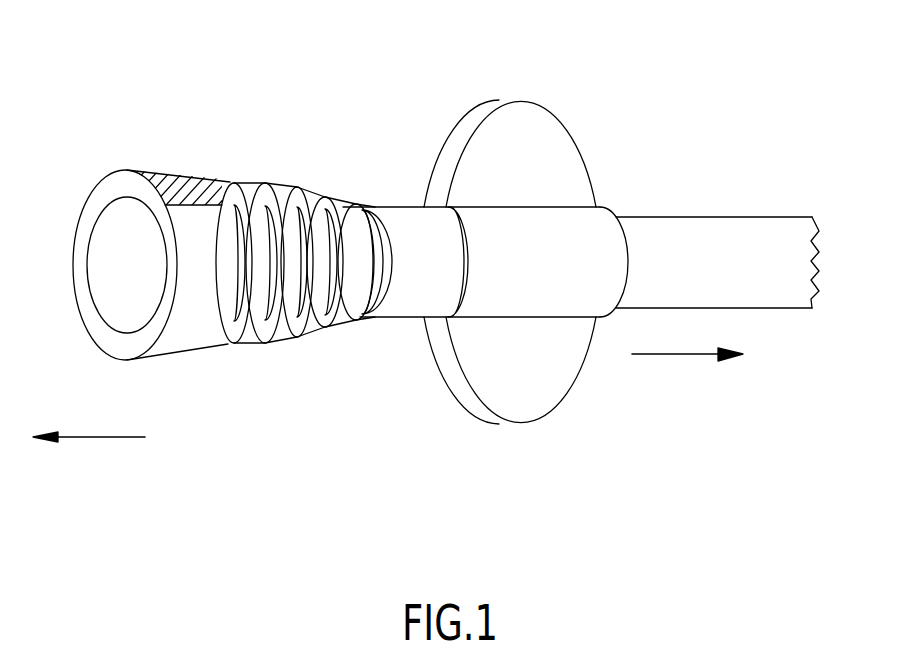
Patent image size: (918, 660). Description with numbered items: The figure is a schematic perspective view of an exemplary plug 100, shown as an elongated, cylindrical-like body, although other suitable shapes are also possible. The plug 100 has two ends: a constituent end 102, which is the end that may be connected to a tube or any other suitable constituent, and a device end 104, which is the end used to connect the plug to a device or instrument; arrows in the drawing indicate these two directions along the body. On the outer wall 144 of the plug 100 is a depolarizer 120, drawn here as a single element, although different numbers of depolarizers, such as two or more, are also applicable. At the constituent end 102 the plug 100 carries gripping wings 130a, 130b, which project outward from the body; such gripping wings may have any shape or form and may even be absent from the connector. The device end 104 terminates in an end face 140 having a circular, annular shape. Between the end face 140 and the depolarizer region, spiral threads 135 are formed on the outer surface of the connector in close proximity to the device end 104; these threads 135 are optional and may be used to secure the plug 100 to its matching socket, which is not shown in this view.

The plug 100 is at (325, 103).
The constituent end 102 is at (677, 354).
The device end 104 is at (100, 437).
The depolarizer 120 is at (192, 188).
The gripping wing 130a is at (533, 98).
The gripping wing 130b is at (547, 420).
The threads 135 is at (363, 318).
The end face 140 is at (72, 267).
The outer wall 144 is at (700, 217).